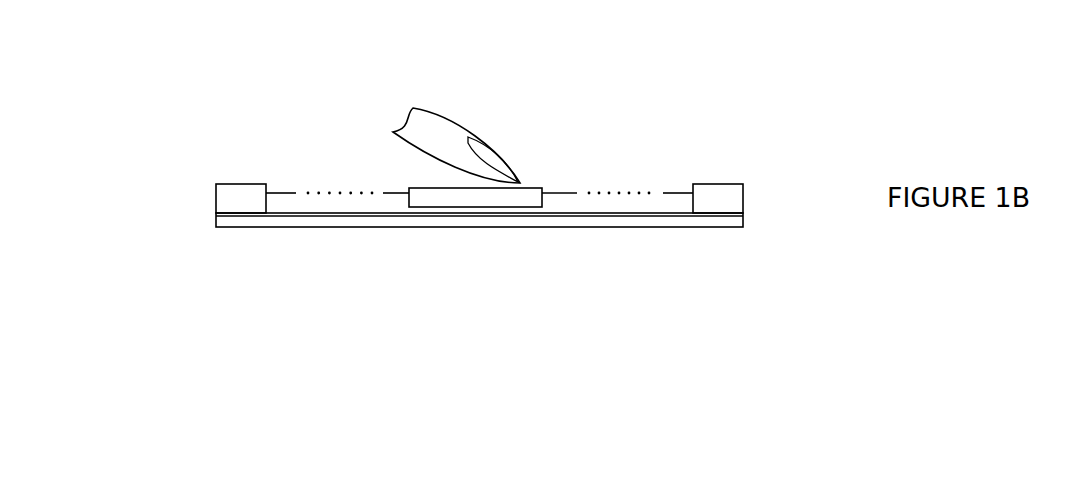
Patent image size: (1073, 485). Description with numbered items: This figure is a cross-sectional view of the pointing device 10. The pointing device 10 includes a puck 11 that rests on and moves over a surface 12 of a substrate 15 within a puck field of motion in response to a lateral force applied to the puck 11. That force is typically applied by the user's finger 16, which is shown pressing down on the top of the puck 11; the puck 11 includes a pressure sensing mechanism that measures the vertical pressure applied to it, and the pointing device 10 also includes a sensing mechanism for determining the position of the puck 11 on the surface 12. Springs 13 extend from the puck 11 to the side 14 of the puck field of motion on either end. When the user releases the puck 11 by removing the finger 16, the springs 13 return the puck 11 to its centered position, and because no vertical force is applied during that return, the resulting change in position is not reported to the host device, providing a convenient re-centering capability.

The pointing device 10 is at (172, 157).
The puck 11 is at (475, 195).
The surface 12 is at (350, 209).
The springs 13 is at (560, 193).
The side of the puck field of motion 14 is at (730, 192).
The substrate 15 is at (498, 227).
The user's finger 16 is at (455, 123).